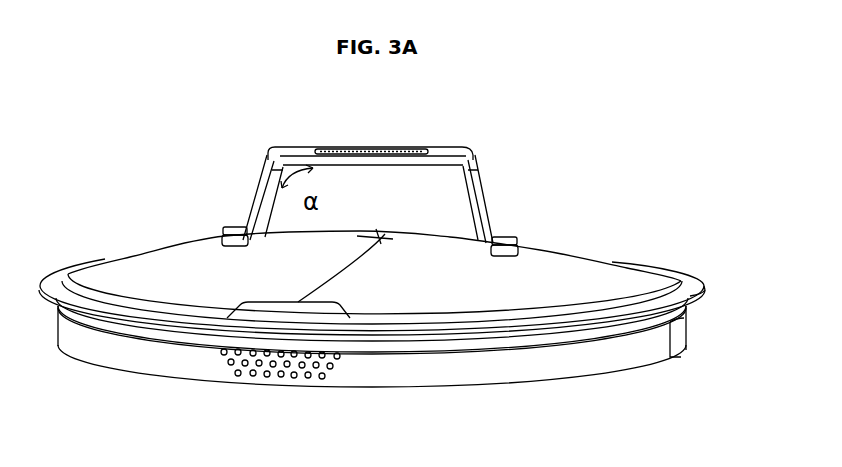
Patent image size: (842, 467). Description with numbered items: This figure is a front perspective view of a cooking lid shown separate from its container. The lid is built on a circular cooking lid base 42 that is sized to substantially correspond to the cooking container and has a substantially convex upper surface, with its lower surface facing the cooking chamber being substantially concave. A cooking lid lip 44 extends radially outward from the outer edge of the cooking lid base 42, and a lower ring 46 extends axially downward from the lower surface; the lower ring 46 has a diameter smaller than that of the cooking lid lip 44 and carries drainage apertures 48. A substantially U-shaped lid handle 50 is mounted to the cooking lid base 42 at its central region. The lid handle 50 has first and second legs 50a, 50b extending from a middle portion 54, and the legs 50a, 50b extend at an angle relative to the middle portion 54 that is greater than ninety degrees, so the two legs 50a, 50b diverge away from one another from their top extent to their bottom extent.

The cooking lid base 42 is at (560, 297).
The cooking lid lip 44 is at (693, 281).
The lower ring 46 is at (643, 358).
The drainage apertures 48 is at (295, 373).
The lid handle 50 is at (378, 171).
The first leg 50a is at (262, 193).
The second leg 50b is at (490, 190).
The middle portion 54 is at (413, 150).